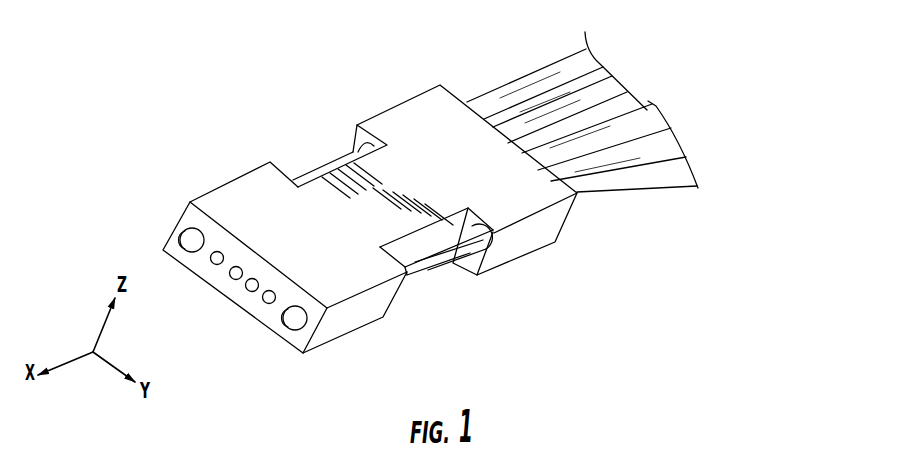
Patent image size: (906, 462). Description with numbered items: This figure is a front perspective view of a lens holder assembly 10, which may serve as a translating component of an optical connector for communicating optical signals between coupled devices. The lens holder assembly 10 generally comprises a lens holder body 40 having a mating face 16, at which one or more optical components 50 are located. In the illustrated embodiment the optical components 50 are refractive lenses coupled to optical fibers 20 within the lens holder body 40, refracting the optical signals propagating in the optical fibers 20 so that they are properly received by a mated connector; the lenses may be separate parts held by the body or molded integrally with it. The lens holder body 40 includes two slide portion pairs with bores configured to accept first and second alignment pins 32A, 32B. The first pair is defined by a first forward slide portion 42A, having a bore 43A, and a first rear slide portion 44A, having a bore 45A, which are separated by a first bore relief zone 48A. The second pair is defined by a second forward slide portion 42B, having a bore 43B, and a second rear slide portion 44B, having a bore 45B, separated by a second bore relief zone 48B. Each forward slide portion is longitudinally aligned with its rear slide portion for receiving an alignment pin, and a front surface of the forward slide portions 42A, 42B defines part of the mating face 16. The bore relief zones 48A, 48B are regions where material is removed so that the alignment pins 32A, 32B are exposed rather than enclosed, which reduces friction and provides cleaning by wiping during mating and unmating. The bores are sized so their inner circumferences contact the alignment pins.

The lens holder assembly 10 is at (197, 57).
The mating face 16 is at (202, 268).
The optical fibers 20 is at (617, 98).
The first alignment pin 32A is at (502, 85).
The second alignment pin 32B is at (625, 178).
The lens holder body 40 is at (228, 180).
The first forward slide portion 42A is at (250, 172).
The second forward slide portion 42B is at (365, 316).
The bore 43A is at (182, 235).
The bore 43B is at (296, 337).
The first rear slide portion 44A is at (413, 110).
The second rear slide portion 44B is at (532, 235).
The bore 45A is at (357, 148).
The bore 45B is at (495, 262).
The first bore relief zone 48A is at (308, 150).
The second bore relief zone 48B is at (418, 295).
The optical components 50 is at (266, 302).